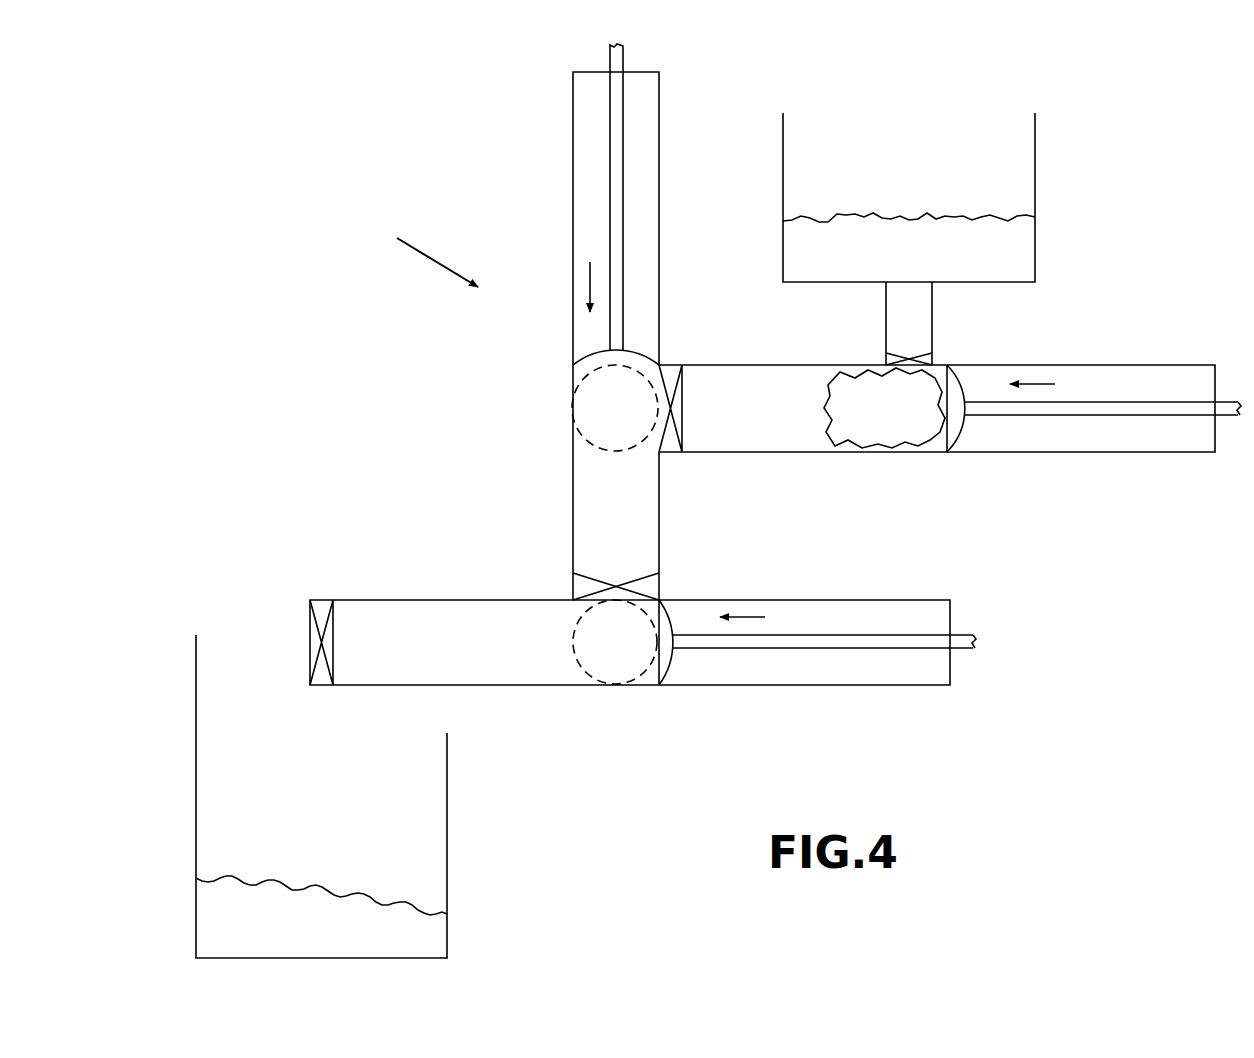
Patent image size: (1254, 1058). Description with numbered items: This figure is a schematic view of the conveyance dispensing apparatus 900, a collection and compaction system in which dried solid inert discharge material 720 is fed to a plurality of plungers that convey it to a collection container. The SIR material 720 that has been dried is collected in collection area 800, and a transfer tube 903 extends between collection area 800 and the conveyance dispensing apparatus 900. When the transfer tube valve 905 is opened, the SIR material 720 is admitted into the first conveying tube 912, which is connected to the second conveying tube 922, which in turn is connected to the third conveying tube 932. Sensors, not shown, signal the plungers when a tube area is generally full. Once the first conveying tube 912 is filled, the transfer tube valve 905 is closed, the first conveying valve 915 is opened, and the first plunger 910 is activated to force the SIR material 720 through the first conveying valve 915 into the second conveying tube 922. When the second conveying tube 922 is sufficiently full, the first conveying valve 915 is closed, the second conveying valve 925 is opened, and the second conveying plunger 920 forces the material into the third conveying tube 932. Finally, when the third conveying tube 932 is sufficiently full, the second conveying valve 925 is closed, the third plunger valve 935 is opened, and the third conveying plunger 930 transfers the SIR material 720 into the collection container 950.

The conveyance dispensing apparatus 900 is at (410, 247).
The collection area 800 is at (1035, 157).
The solid inert discharge material 720 is at (1003, 250).
The transfer tube 903 is at (932, 313).
The transfer tube valve 905 is at (932, 358).
The first conveying tube 912 is at (772, 365).
The first conveying valve 915 is at (673, 365).
The first plunger 910 is at (962, 432).
The second conveying plunger 920 is at (636, 350).
The second conveying tube 922 is at (660, 516).
The second conveying valve 925 is at (647, 590).
The third conveying plunger 930 is at (672, 665).
The third conveying tube 932 is at (430, 600).
The third plunger valve 935 is at (322, 600).
The collection container 950 is at (447, 812).